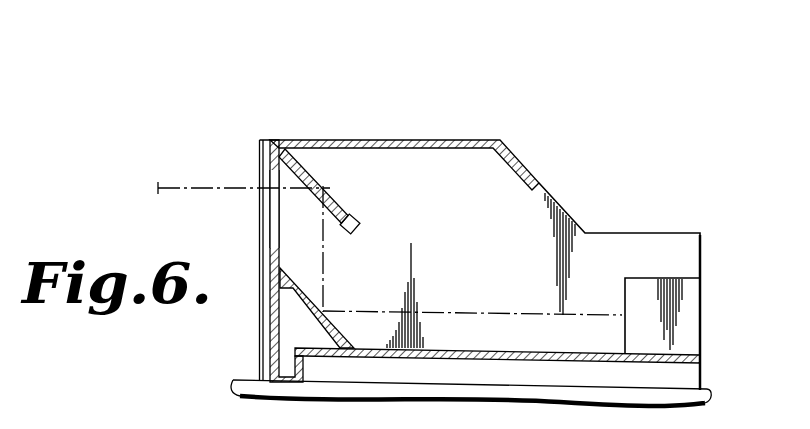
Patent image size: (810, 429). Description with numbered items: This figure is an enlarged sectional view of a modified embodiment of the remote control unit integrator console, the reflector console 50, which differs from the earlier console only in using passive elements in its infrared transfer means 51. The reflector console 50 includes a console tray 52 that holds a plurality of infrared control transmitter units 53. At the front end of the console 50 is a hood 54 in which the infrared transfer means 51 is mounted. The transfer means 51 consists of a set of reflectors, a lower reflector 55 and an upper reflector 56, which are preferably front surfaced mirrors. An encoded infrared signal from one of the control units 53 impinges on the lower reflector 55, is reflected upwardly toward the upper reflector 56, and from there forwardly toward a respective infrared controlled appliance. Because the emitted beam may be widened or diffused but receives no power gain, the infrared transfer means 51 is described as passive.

The reflector console 50 is at (380, 127).
The infrared transfer means 51 is at (360, 266).
The console tray 52 is at (667, 228).
The infrared control transmitter units 53 is at (635, 294).
The hood 54 is at (472, 140).
The lower reflector 55 is at (323, 325).
The upper reflector 56 is at (347, 206).